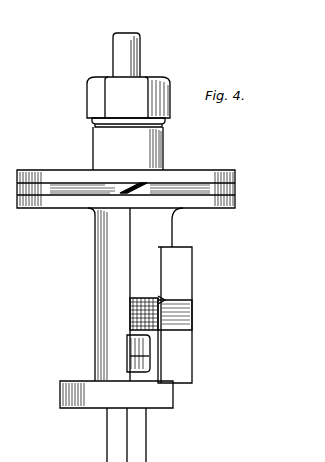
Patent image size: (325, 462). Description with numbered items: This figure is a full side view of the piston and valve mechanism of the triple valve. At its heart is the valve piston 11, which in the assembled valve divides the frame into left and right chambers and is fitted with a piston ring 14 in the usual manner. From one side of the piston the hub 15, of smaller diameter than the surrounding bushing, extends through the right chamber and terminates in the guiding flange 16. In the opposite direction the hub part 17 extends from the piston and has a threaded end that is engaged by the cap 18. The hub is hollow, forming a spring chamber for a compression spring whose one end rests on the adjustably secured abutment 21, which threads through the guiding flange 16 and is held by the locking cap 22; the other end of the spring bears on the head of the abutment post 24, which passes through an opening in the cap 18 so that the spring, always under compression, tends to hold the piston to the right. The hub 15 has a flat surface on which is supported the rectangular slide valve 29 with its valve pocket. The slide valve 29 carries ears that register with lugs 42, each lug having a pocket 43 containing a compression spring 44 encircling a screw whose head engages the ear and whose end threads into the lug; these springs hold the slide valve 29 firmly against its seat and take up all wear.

The valve piston 11 is at (222, 177).
The piston ring 14 is at (237, 186).
The hub 15 is at (95, 256).
The guiding flange 16 is at (60, 393).
The hub part 17 is at (158, 150).
The cap 18 is at (168, 78).
The abutment 21 is at (175, 385).
The locking cap 22 is at (146, 450).
The abutment post 24 is at (140, 34).
The slide valve 29 is at (183, 353).
The lug 42 is at (130, 304).
The pocket 43 is at (162, 335).
The compression spring 44 is at (165, 300).